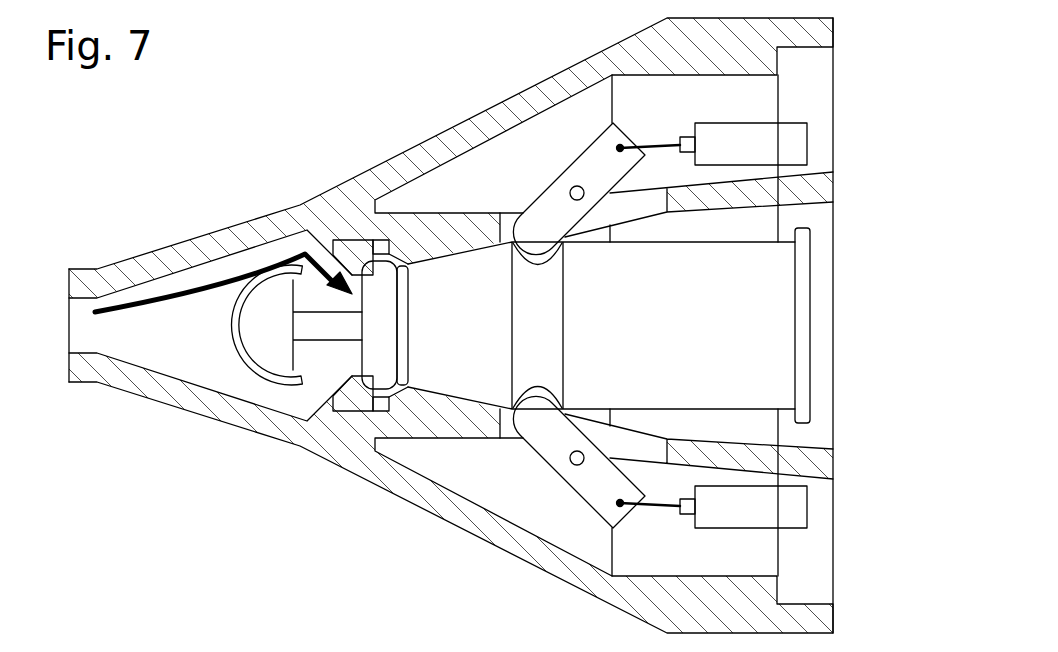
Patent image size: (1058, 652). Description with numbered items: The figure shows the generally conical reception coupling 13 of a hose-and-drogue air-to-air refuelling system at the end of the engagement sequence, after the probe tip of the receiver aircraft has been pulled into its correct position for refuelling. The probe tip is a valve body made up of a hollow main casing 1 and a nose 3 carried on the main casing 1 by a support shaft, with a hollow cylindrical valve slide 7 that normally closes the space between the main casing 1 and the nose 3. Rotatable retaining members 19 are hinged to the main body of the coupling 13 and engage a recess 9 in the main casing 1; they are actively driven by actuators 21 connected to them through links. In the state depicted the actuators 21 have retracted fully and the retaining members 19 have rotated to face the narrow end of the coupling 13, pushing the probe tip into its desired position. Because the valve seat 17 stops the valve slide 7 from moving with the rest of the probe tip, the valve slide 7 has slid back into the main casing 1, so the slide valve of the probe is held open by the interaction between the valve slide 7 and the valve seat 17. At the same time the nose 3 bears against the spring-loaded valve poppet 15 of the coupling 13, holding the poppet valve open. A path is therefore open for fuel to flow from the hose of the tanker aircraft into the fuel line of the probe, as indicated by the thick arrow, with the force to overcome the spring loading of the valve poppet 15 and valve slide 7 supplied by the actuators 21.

The main casing 1 is at (748, 242).
The nose 3 is at (263, 326).
The valve slide 7 is at (375, 353).
The recess 9 is at (540, 297).
The reception coupling 13 is at (180, 243).
The valve poppet 15 is at (240, 325).
The valve seat 17 is at (346, 400).
The retaining members 19 is at (540, 192).
The actuators 21 is at (807, 145).